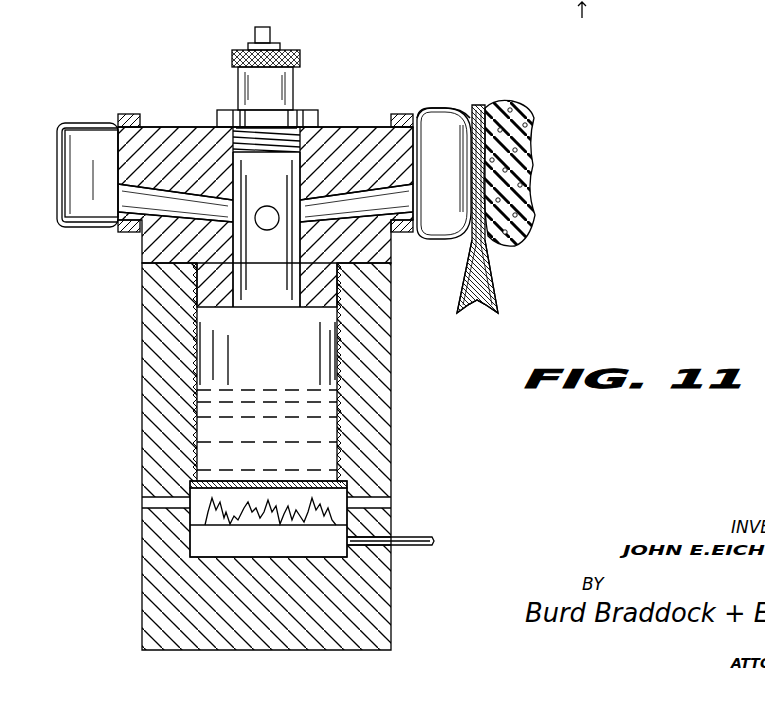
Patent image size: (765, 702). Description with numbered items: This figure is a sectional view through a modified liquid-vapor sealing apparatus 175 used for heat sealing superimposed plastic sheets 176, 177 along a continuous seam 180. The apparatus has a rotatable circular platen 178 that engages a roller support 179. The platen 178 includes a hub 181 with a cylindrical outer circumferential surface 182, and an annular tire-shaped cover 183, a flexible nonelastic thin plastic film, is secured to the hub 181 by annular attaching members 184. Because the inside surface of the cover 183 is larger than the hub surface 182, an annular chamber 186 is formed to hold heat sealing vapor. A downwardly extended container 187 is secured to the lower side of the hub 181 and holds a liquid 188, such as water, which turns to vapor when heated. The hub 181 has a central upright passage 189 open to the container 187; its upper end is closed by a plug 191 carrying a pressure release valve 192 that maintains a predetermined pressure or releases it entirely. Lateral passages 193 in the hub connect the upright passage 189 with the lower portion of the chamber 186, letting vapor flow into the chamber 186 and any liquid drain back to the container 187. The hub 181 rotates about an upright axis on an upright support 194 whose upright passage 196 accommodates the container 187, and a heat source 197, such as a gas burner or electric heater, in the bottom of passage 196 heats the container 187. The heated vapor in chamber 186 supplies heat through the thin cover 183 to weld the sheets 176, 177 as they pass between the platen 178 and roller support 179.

The liquid-vapor sealing apparatus 175 is at (346, 87).
The plastic sheet 176 is at (480, 307).
The plastic sheet 177 is at (496, 290).
The rotatable circular platen 178 is at (176, 126).
The roller support 179 is at (540, 181).
The continuous seam 180 is at (487, 115).
The hub 181 is at (355, 140).
The cylindrical outer circumferential surface 182 is at (443, 153).
The annular tire-shaped cover 183 is at (450, 108).
The annular attaching members 184 is at (122, 114).
The annular chamber 186 is at (76, 175).
The container 187 is at (340, 363).
The liquid 188 is at (240, 388).
The central upright passage 189 is at (265, 283).
The plug 191 is at (224, 110).
The pressure release valve 192 is at (243, 50).
The lateral passages 193 is at (398, 199).
The upright support 194 is at (372, 445).
The upright passage 196 is at (205, 495).
The heat source 197 is at (345, 538).